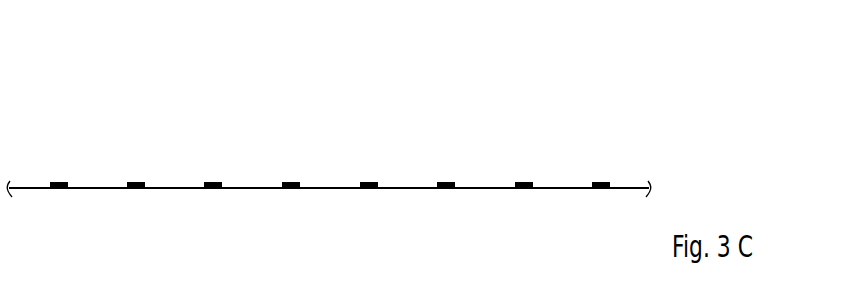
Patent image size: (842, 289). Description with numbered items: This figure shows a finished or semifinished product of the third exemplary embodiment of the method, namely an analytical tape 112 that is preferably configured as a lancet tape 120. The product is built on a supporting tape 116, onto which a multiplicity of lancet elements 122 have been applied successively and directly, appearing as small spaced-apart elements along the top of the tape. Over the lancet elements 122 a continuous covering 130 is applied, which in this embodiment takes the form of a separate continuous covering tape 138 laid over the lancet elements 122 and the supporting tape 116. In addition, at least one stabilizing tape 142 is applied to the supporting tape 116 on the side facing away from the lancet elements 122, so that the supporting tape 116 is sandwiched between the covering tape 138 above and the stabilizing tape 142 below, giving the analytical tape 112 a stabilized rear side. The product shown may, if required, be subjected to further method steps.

The analytical tape 112 is at (338, 144).
The lancet tape 120 is at (540, 165).
The lancet element 122 is at (212, 182).
The continuous covering 130 is at (288, 170).
The continuous covering tape 138 is at (318, 176).
The supporting tape 116 is at (260, 189).
The stabilizing tape 142 is at (343, 205).